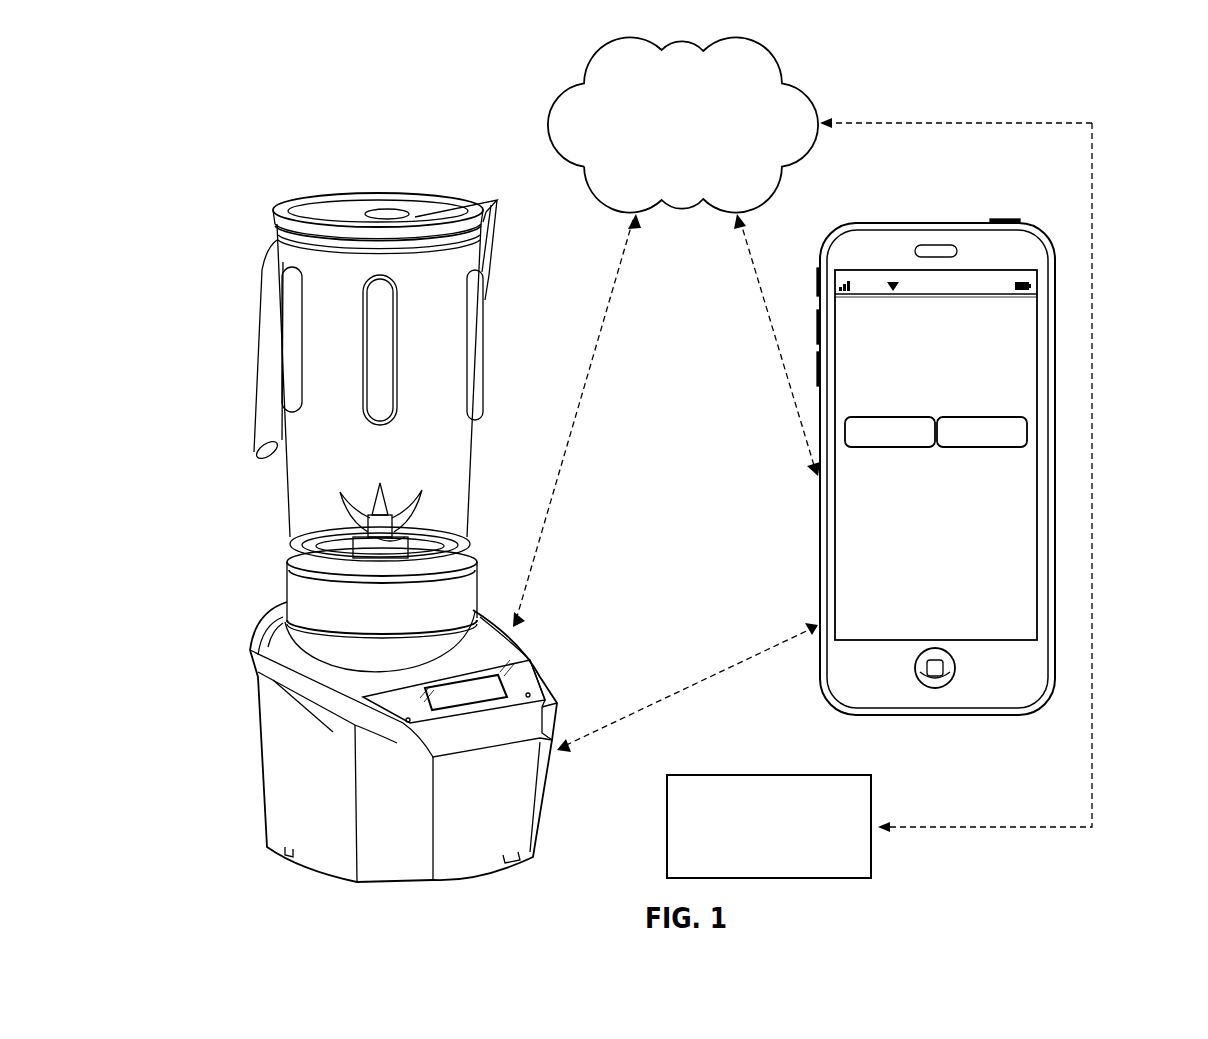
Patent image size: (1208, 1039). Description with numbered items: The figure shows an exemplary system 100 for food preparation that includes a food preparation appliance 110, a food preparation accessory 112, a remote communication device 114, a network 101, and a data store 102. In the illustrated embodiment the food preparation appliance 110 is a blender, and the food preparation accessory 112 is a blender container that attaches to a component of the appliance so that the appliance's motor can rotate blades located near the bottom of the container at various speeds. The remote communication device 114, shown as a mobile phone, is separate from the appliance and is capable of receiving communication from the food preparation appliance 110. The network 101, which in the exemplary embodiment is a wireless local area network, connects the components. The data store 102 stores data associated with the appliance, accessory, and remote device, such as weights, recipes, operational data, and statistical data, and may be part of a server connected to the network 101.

The system 100 is at (1094, 74).
The network 101 is at (621, 40).
The data store 102 is at (726, 775).
The food preparation appliance 110 is at (258, 752).
The food preparation accessory 112 is at (291, 524).
The remote communication device 114 is at (914, 223).